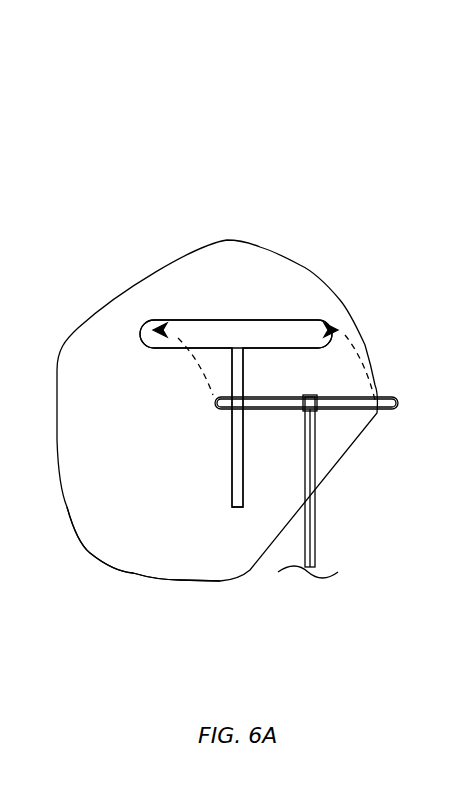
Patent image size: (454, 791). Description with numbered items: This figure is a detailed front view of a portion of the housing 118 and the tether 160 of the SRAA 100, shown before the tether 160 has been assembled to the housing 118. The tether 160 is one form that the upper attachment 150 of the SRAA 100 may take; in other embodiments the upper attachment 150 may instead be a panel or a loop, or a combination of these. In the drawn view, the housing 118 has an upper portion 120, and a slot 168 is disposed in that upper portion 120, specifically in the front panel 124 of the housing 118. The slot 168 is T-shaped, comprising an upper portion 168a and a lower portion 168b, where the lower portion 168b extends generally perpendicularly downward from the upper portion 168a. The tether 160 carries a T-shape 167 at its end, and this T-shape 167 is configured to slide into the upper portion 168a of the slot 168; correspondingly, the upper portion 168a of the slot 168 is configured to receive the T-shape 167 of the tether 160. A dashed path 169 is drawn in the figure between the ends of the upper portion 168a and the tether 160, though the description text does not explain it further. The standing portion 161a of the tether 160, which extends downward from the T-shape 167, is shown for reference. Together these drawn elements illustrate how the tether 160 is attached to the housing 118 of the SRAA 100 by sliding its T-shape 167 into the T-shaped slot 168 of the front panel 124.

The SRAA 100 is at (116, 196).
The upper attachment 150 is at (182, 216).
The housing 118 is at (88, 492).
The upper portion 120 is at (132, 537).
The front panel 124 is at (155, 466).
The slot 168 is at (140, 325).
The upper portion of slot 168a is at (207, 320).
The lower portion of slot 168b is at (218, 485).
The guide path 169 is at (207, 375).
The tether 160 is at (315, 515).
The standing portion 161a is at (315, 538).
The T-shape 167 is at (327, 415).